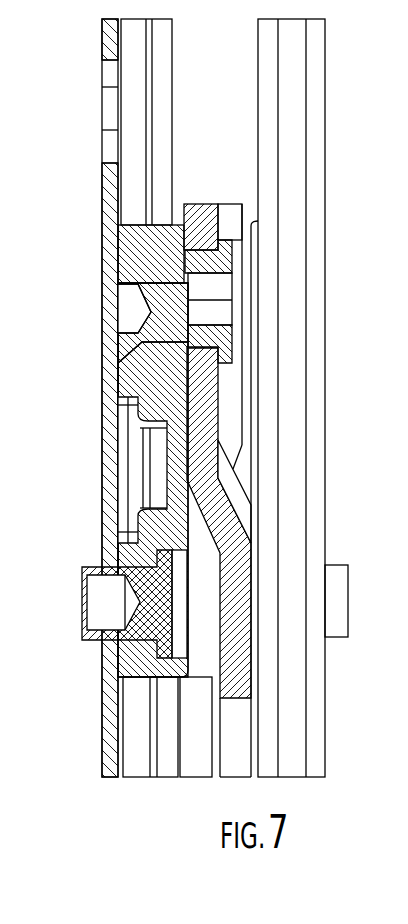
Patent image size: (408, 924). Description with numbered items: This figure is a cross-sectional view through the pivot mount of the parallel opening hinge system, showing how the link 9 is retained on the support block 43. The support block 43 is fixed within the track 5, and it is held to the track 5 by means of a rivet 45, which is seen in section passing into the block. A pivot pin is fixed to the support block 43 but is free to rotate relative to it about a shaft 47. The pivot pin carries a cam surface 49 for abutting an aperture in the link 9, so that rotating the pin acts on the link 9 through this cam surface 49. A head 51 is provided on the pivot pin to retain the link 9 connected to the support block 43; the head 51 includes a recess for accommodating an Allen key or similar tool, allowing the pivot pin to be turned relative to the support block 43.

The track 5 is at (112, 747).
The link 9 is at (240, 675).
The support block 43 is at (130, 373).
The rivet 45 is at (142, 602).
The shaft 47 is at (150, 285).
The cam surface 49 is at (193, 262).
The head 51 is at (220, 242).